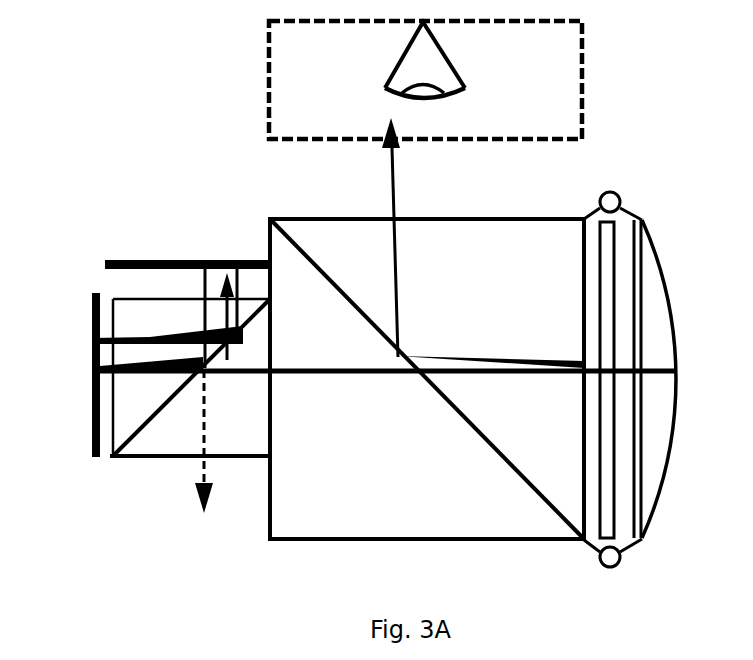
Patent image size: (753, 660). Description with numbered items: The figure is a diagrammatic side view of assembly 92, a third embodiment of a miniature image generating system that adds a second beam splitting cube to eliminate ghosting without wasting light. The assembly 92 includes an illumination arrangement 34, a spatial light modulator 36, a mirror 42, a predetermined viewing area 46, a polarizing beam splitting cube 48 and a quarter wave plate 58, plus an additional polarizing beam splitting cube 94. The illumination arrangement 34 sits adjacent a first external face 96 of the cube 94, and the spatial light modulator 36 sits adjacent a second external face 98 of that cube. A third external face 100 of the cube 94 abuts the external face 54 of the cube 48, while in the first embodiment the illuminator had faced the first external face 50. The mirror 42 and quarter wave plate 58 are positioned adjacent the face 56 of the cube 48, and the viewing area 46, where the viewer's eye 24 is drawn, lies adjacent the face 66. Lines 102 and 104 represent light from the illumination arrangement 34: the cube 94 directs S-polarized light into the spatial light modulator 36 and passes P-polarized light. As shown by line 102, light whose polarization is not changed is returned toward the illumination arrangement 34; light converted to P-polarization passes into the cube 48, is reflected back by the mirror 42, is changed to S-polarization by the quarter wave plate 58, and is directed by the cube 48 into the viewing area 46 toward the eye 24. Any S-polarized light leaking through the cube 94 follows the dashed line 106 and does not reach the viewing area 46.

The eye of viewer 24 is at (433, 65).
The illumination arrangement 34 is at (197, 260).
The spatial light modulator 36 is at (92, 393).
The mirror 42 is at (650, 465).
The predetermined area 46 is at (297, 87).
The polarizing beam splitting cube 48 is at (292, 518).
The first external face 50 is at (383, 538).
The second external face 54 is at (272, 418).
The third face 56 is at (580, 430).
The quarter wave plate 58 is at (608, 522).
The face 66 is at (492, 223).
The assembly 92 is at (600, 157).
The additional polarizing beam splitting cube 94 is at (240, 455).
The first external face 96 is at (135, 303).
The second external face 98 is at (113, 381).
The third external face 100 is at (270, 380).
The line 102 is at (391, 374).
The line 104 is at (122, 337).
The dashed line 106 is at (200, 470).